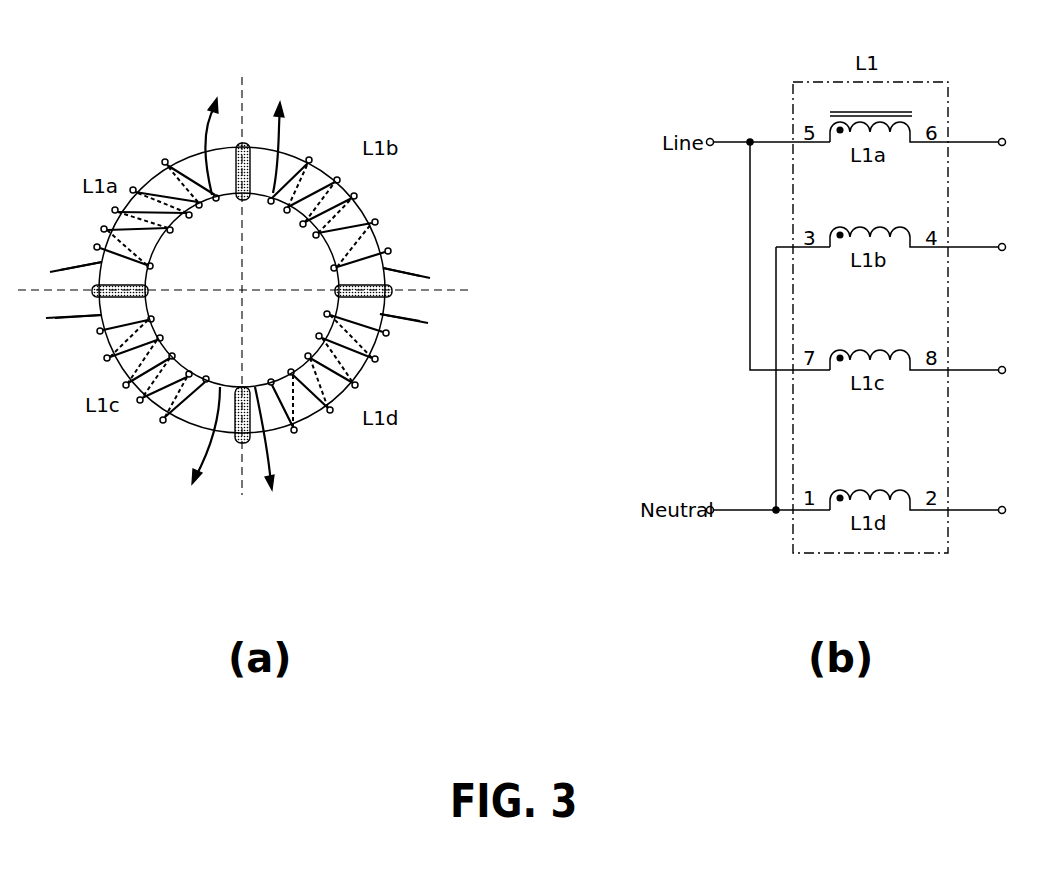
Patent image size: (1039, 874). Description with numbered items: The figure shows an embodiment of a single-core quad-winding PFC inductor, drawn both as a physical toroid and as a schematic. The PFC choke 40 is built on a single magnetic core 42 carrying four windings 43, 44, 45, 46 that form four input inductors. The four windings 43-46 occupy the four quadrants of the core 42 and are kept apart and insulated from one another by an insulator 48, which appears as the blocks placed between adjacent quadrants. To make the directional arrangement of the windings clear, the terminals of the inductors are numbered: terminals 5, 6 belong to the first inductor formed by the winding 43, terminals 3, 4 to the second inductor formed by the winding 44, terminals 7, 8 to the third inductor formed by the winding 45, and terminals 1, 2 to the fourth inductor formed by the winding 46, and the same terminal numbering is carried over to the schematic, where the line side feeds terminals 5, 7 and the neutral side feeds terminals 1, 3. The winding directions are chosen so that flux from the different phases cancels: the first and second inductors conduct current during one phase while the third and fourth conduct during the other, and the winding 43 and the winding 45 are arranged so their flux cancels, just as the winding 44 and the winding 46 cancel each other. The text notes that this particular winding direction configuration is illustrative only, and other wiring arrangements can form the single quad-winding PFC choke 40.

The PFC choke 40 is at (388, 38).
The magnetic core 42 is at (187, 426).
The winding 43 is at (70, 262).
The winding 44 is at (406, 268).
The winding 45 is at (70, 320).
The winding 46 is at (410, 325).
The insulator 48 is at (247, 142).
The terminal 1 is at (415, 319).
The terminal 2 is at (268, 452).
The terminal 3 is at (418, 262).
The terminal 4 is at (286, 135).
The terminal 5 is at (70, 262).
The terminal 6 is at (207, 136).
The terminal 7 is at (67, 319).
The terminal 8 is at (201, 449).